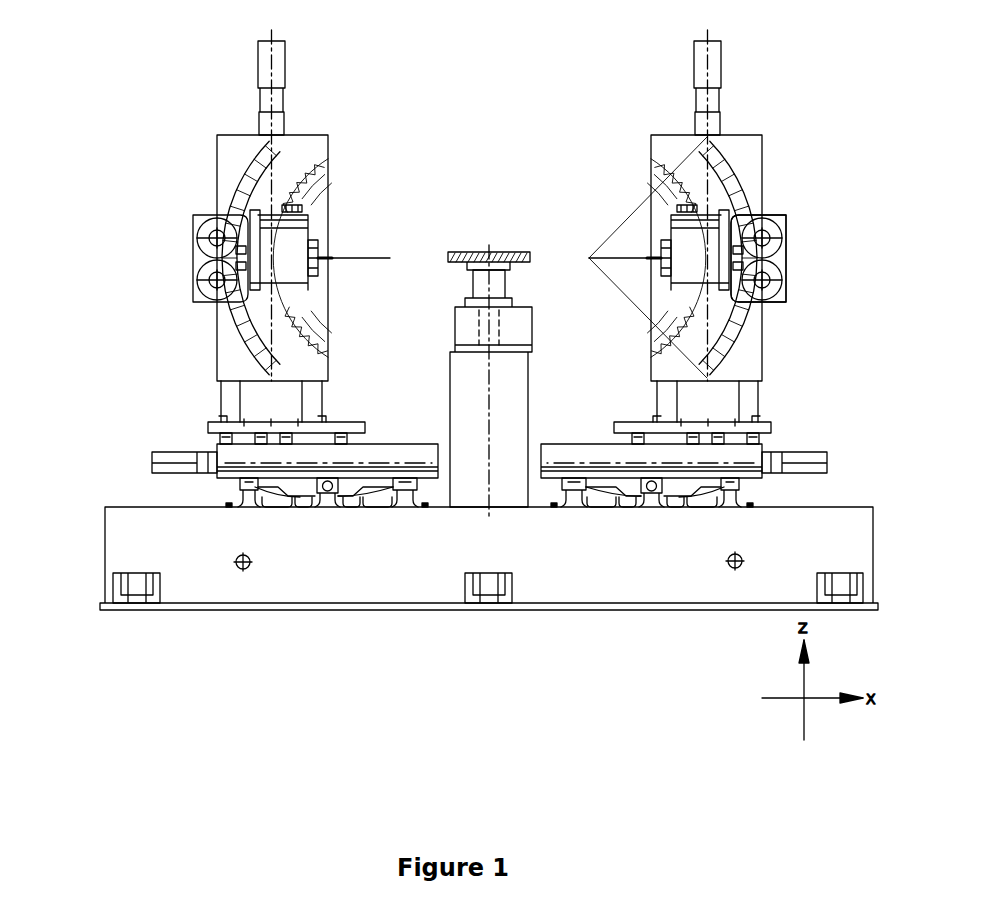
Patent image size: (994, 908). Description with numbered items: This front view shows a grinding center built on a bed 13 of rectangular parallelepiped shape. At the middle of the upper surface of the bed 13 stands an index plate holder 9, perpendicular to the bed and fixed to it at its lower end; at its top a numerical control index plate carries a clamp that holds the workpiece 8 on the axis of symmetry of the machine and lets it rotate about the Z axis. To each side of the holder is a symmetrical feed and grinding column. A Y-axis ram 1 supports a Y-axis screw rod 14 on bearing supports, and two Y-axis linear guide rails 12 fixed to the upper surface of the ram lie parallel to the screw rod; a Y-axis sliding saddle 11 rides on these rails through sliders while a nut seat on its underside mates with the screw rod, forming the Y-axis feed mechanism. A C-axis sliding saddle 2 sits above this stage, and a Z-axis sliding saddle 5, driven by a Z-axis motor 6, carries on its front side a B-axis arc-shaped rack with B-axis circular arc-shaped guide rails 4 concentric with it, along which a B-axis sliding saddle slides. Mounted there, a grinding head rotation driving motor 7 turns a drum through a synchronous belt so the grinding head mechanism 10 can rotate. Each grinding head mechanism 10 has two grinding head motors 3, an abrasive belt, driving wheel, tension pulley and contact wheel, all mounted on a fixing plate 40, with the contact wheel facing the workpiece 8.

The Y-axis ram 1 is at (727, 502).
The C-axis sliding saddle 2 is at (760, 431).
The grinding head motor 3 is at (762, 280).
The B-axis circular arc-shaped guide rail 4 is at (733, 177).
The Z-axis sliding saddle 5 is at (744, 157).
The Z-axis motor 6 is at (710, 67).
The grinding head rotation driving motor 7 is at (678, 218).
The workpiece 8 is at (463, 252).
The index plate holder 9 is at (452, 370).
The grinding head mechanism 10 is at (287, 250).
The Y-axis sliding saddle 11 is at (228, 474).
The Y-axis linear guide rail 12 is at (257, 485).
The bed 13 is at (163, 550).
The Y-axis screw rod 14 is at (330, 493).
The fixing plate 40 is at (780, 296).